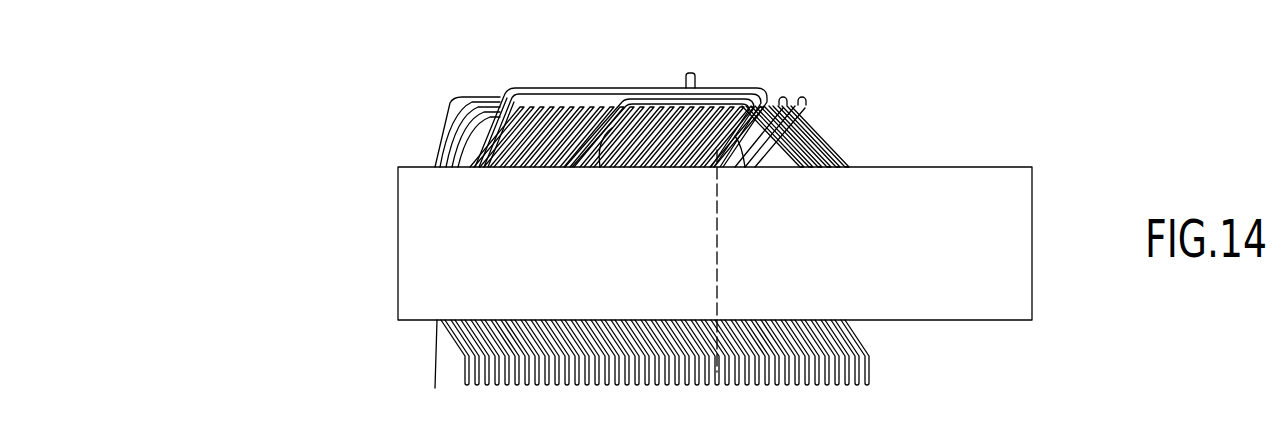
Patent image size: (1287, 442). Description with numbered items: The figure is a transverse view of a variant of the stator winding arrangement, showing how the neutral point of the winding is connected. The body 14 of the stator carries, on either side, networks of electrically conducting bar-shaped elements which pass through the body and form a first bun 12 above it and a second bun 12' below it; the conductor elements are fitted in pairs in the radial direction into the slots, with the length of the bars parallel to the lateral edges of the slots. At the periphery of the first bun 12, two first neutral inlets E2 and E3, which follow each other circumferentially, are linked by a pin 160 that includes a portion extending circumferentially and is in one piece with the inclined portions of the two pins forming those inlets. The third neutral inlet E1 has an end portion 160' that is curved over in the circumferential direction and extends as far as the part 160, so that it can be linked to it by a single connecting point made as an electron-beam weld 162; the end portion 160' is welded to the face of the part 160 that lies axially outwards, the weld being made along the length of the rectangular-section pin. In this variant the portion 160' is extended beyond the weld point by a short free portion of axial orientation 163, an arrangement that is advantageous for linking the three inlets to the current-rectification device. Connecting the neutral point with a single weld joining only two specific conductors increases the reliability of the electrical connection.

The first bun 12 is at (602, 107).
The second bun 12' is at (590, 364).
The body of the stator 14 is at (422, 250).
The pin 160 is at (662, 96).
The end portion 160' is at (518, 90).
The electron-beam weld 162 is at (650, 90).
The free portion of axial orientation 163 is at (694, 75).
The third neutral inlet E1 is at (463, 133).
The neutral inlet E2 is at (600, 167).
The neutral inlet E3 is at (745, 167).